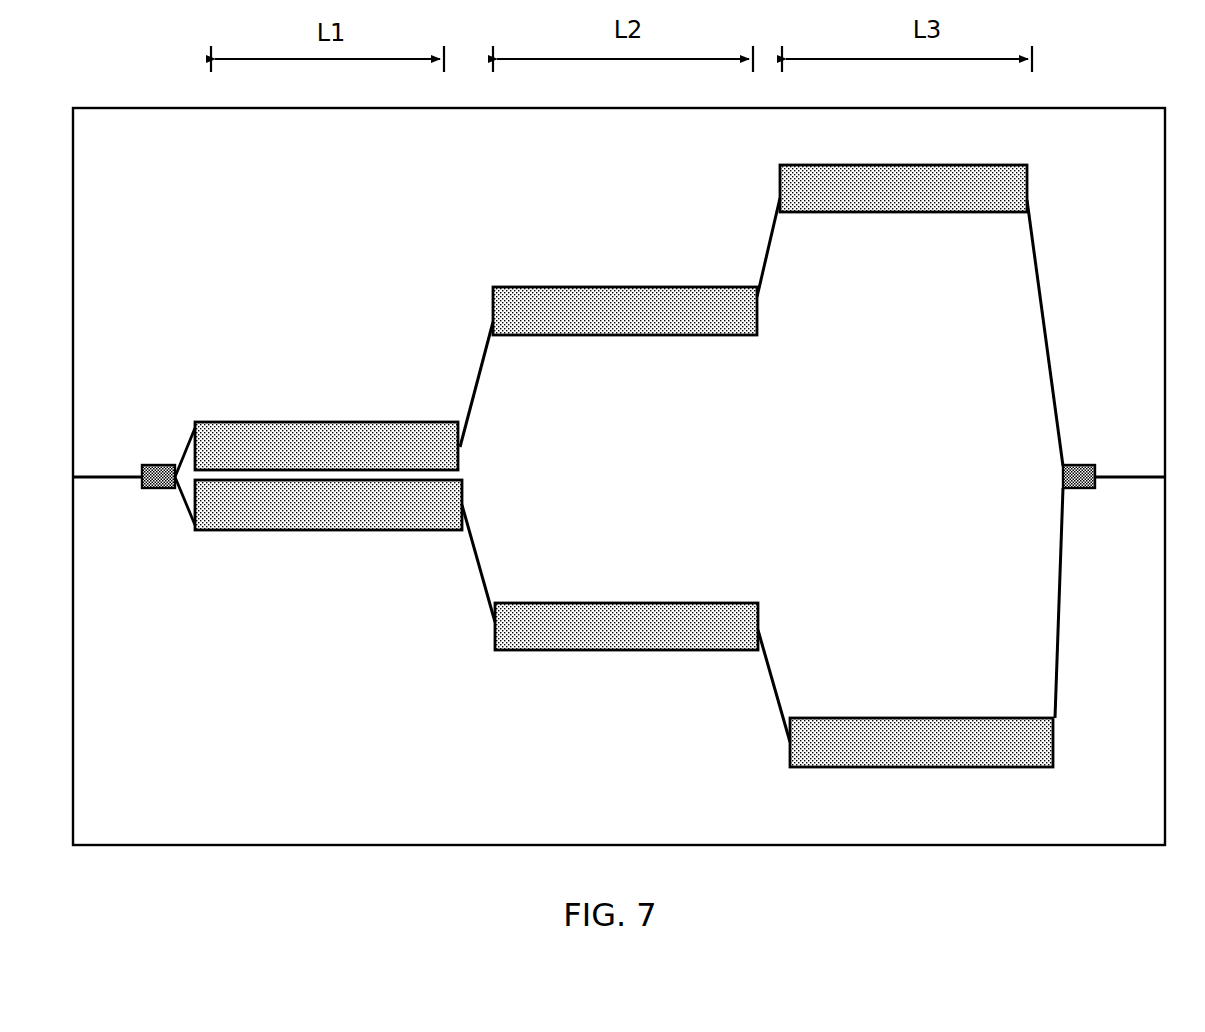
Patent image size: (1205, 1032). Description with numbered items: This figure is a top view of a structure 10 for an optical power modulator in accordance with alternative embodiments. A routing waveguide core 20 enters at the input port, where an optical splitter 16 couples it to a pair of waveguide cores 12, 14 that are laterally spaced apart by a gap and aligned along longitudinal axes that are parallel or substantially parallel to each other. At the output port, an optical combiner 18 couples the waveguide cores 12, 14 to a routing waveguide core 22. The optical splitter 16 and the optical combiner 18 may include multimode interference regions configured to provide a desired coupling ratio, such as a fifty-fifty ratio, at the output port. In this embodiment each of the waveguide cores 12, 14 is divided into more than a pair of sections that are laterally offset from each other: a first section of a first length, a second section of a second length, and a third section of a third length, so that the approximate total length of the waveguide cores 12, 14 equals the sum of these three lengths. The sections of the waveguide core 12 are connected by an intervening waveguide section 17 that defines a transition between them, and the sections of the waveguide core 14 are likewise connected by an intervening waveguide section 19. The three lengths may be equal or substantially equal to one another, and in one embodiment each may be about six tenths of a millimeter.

The structure 10 is at (200, 280).
The waveguide core 12 is at (358, 442).
The waveguide core 14 is at (277, 500).
The optical splitter 16 is at (158, 463).
The intervening waveguide section 17 is at (472, 398).
The optical combiner 18 is at (1075, 489).
The intervening waveguide section 19 is at (480, 565).
The routing waveguide core 20 is at (93, 478).
The routing waveguide core 22 is at (1130, 473).